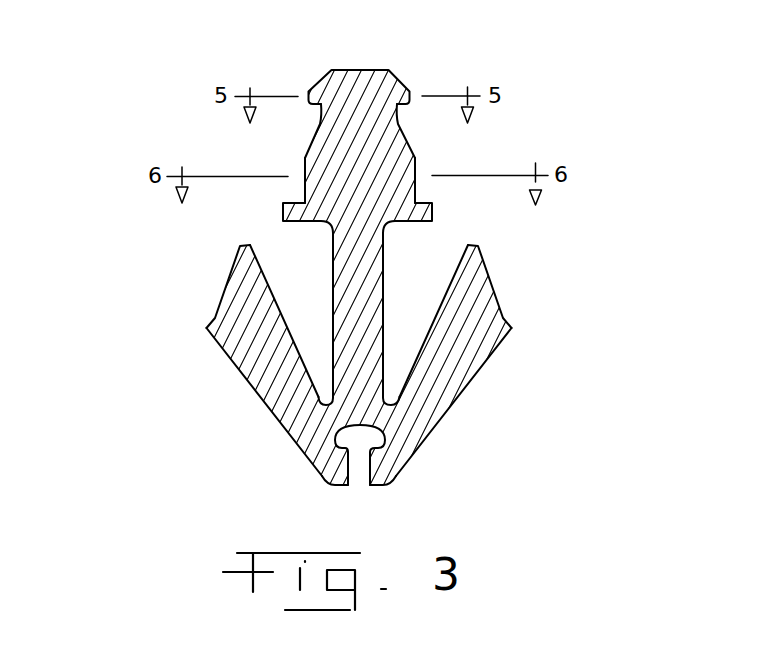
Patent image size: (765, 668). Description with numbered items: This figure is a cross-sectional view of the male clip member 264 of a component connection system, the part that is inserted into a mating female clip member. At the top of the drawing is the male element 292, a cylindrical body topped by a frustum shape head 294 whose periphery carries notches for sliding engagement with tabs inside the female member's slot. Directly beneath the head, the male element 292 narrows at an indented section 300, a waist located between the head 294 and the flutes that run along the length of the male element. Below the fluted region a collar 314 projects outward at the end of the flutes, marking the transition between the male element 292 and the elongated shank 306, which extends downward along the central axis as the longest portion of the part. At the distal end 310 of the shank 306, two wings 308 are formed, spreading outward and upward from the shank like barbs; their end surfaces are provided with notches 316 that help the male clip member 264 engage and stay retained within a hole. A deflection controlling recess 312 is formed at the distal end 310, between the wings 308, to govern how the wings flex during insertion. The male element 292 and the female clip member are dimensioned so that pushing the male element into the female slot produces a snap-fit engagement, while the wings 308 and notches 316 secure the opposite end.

The male clip member 264 is at (162, 283).
The male element 292 is at (333, 171).
The frustum shape head 294 is at (318, 86).
The indented section 300 is at (307, 111).
The elongated shank 306 is at (333, 297).
The wings 308 is at (227, 345).
The distal end 310 is at (396, 487).
The deflection controlling recess 312 is at (356, 449).
The collar 314 is at (425, 213).
The notches 316 is at (213, 320).